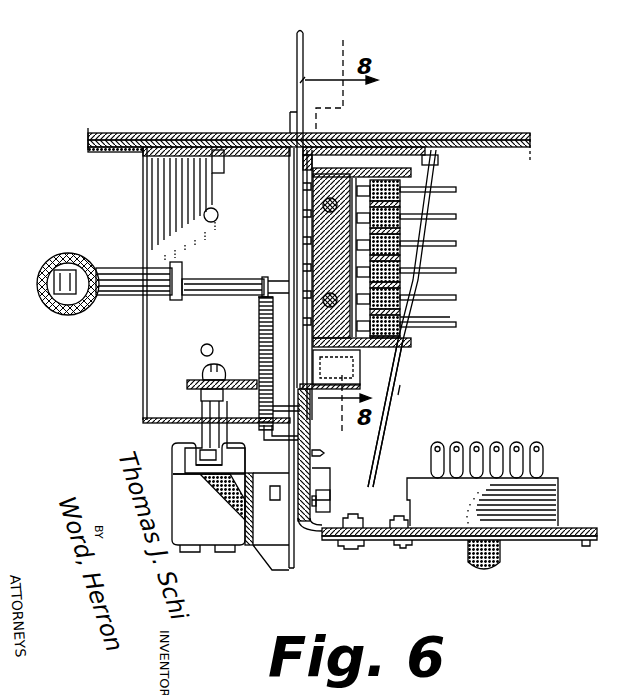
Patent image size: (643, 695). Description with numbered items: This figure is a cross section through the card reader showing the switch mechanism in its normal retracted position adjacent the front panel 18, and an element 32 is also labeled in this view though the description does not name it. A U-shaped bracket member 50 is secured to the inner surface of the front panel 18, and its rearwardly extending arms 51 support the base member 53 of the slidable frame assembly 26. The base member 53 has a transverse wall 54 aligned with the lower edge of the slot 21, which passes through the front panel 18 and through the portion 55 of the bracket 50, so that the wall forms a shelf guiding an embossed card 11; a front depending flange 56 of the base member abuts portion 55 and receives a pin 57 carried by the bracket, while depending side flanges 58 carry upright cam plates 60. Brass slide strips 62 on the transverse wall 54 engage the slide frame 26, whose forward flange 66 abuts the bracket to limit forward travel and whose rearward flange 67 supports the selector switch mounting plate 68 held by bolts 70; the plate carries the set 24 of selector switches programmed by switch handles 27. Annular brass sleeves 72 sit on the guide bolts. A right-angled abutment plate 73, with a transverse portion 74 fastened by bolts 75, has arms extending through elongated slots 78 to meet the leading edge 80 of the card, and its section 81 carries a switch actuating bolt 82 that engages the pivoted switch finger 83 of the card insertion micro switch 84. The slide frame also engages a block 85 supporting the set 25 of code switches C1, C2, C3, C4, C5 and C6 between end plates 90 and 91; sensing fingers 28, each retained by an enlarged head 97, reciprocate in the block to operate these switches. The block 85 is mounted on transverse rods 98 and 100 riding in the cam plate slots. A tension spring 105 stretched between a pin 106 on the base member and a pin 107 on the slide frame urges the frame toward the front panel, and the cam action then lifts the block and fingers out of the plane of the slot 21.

The embossed card 11 is at (312, 43).
The front panel 18 is at (106, 126).
The slot 21 is at (294, 130).
The set of selector switches 24 is at (540, 498).
The set of code switches 25 is at (424, 180).
The slidable frame assembly 26 is at (317, 548).
The switch handles 27 is at (500, 558).
The fingers 28 is at (316, 216).
The top plate end 32 is at (507, 134).
The U-shaped bracket member 50 is at (404, 384).
The rearwardly extending arms 51 is at (380, 448).
The base member 53 is at (212, 194).
The transverse wall 54 is at (289, 240).
The portion of bracket 55 is at (438, 163).
The front depending flange 56 is at (143, 166).
The pin 57 is at (212, 164).
The depending side flanges 58 is at (162, 356).
The cam plate 60 is at (360, 368).
The brass slide strips 62 is at (296, 572).
The forward flange 66 is at (352, 168).
The rearward flange 67 is at (358, 516).
The selector switch mounting plate 68 is at (586, 546).
The bolts 70 is at (356, 548).
The annular brass sleeves 72 is at (332, 504).
The right-angled abutment plate 73 is at (322, 456).
The transverse portion 74 is at (326, 476).
The bolts 75 is at (316, 448).
The elongated slots 78 is at (273, 410).
The leading edge 80 is at (360, 387).
The section 81 is at (226, 380).
The switch actuating bolt 82 is at (203, 396).
The pivoted switch finger 83 is at (210, 428).
The card insertion micro switch 84 is at (206, 514).
The block 85 is at (307, 262).
The end plate 90 is at (400, 346).
The end plate 91 is at (432, 160).
The enlarged head 97 is at (402, 318).
The transverse rod 98 is at (323, 205).
The transverse rod 100 is at (262, 332).
The tension spring 105 is at (258, 304).
The pin 106 is at (276, 283).
The pin 107 is at (280, 442).
The code switch C1 is at (402, 193).
The code switch C2 is at (402, 219).
The code switch C3 is at (402, 246).
The code switch C4 is at (402, 273).
The code switch C5 is at (402, 300).
The code switch C6 is at (402, 327).